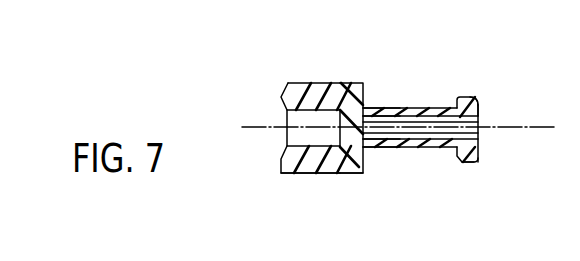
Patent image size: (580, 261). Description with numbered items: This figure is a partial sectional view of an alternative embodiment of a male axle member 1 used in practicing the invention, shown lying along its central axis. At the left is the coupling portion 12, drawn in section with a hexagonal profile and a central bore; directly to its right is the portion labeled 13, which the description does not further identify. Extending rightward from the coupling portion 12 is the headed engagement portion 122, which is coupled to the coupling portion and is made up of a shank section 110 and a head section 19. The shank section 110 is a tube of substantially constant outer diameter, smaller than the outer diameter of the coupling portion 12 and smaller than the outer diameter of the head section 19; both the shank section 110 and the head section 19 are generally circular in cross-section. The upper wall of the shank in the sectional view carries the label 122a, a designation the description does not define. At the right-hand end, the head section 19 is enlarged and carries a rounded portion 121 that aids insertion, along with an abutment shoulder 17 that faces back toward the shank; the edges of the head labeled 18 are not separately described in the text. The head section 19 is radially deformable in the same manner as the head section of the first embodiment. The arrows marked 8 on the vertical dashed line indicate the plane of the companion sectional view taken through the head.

The male axle member 1 is at (304, 173).
The section line 8- 8 is at (444, 88).
The coupling portion 12 is at (303, 84).
The coupling body 13 is at (361, 83).
The abutment shoulder 17 is at (456, 96).
The bead 18 is at (480, 107).
The head section 19 is at (481, 157).
The shank section 110 is at (421, 148).
The rounded portion 121 is at (473, 97).
The headed engagement portion 122 is at (377, 149).
The upper tube wall 122a is at (373, 108).